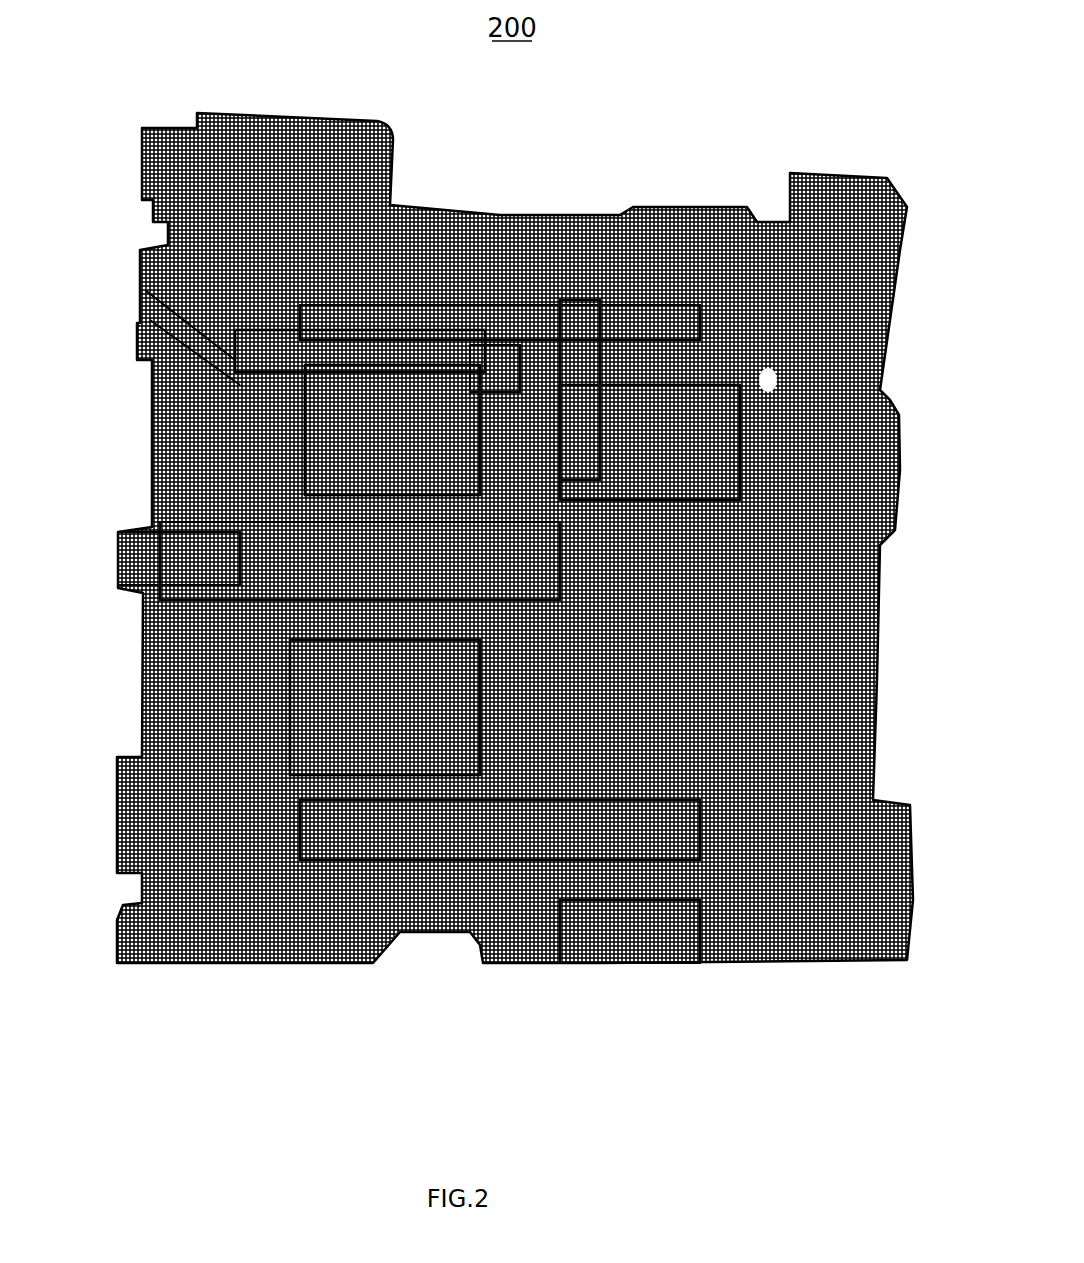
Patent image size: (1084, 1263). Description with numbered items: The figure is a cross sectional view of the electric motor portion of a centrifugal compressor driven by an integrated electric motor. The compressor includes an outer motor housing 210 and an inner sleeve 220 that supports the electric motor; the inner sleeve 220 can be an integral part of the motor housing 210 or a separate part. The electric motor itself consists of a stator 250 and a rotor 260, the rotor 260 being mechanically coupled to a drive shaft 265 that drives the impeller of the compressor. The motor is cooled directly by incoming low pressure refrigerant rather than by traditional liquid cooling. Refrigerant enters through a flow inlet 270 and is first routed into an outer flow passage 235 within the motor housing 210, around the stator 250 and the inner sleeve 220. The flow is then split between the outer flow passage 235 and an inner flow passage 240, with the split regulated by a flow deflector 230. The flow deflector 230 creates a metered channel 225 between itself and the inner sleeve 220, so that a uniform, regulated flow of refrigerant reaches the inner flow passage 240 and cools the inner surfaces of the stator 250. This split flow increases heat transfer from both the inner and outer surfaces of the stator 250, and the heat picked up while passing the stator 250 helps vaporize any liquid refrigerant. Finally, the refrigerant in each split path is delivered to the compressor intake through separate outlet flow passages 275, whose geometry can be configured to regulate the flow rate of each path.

The outer motor housing 210 is at (642, 253).
The inner sleeve 220 is at (407, 353).
The metered channel 225 is at (498, 357).
The flow deflector 230 is at (577, 380).
The outer flow passage 235 is at (525, 333).
The inner flow passage 240 is at (663, 452).
The stator 250 is at (363, 437).
The rotor 260 is at (365, 550).
The drive shaft 265 is at (130, 595).
The flow inlet 270 is at (610, 963).
The outlet flow passages 275 is at (133, 299).